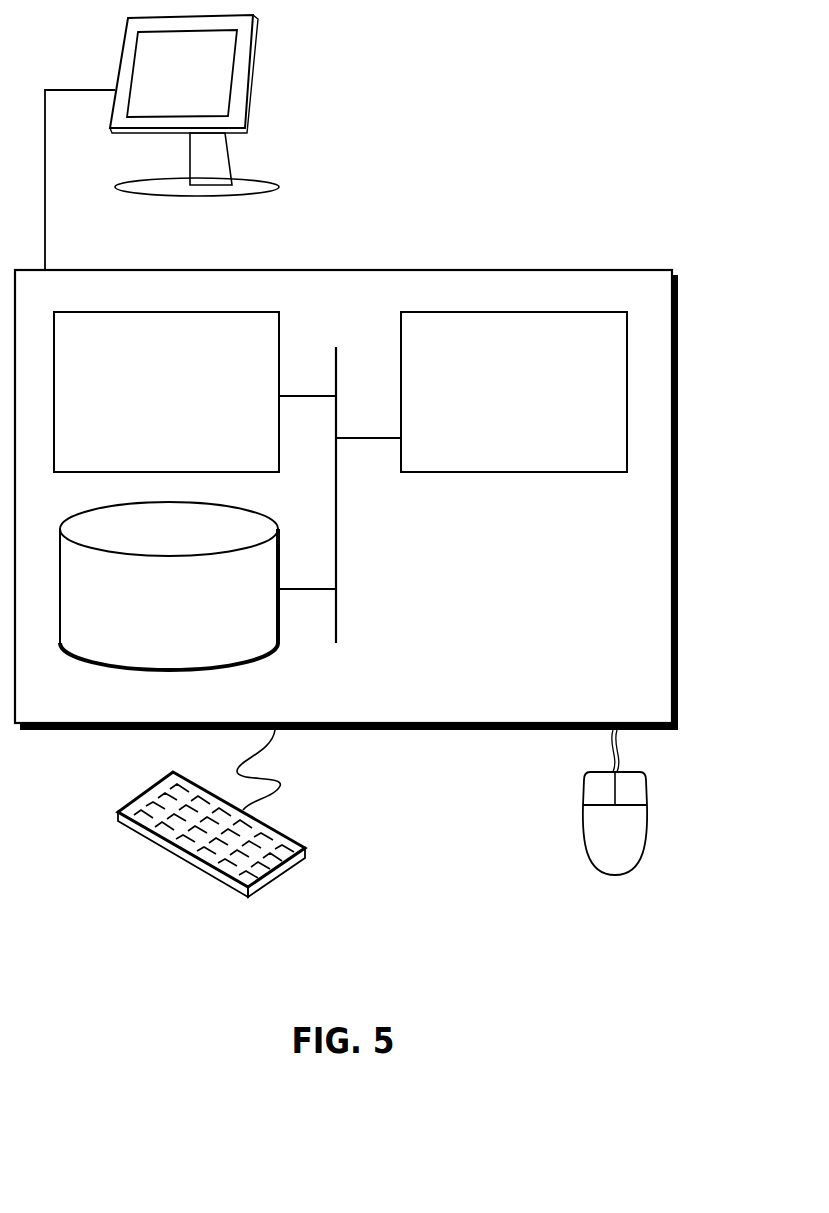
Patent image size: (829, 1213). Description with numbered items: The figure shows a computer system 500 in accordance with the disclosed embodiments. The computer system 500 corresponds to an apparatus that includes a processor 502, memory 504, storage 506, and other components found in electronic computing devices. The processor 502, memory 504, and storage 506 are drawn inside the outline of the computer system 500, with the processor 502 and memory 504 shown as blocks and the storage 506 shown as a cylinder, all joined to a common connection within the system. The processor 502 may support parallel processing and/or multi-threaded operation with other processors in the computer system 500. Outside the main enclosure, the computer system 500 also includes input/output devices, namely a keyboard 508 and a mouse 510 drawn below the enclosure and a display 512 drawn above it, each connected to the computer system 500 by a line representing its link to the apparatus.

The computer system 500 is at (390, 247).
The processor 502 is at (496, 406).
The memory 504 is at (146, 404).
The storage 506 is at (152, 617).
The keyboard 508 is at (135, 837).
The mouse 510 is at (594, 847).
The display 512 is at (162, 143).